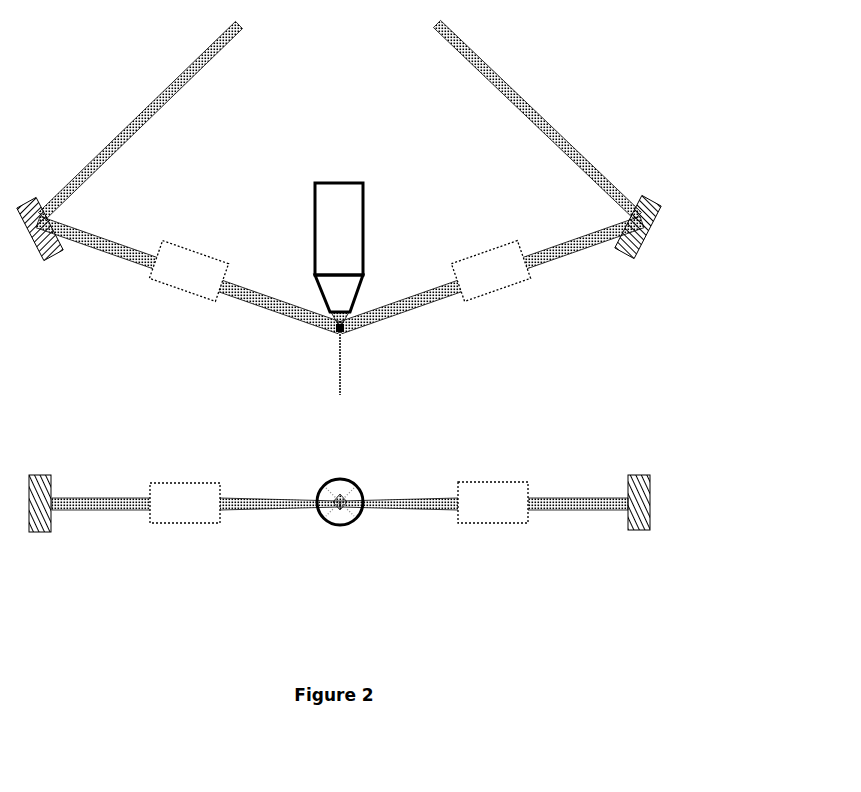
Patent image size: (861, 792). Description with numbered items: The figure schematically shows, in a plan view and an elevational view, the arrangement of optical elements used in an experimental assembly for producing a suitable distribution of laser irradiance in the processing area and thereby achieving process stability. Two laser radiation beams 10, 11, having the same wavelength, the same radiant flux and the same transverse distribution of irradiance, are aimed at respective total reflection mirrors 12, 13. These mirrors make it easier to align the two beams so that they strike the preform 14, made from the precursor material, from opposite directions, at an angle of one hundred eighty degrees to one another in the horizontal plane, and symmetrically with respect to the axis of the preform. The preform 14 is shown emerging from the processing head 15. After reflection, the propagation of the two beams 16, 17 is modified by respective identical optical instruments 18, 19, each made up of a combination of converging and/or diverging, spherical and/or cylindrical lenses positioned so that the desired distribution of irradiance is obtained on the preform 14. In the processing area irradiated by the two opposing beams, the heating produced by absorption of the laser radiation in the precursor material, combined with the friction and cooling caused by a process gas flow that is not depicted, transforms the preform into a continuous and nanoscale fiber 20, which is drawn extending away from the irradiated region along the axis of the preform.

The laser radiation beam 10 is at (194, 80).
The laser radiation beam 11 is at (478, 77).
The total reflection mirror 12 is at (28, 197).
The total reflection mirror 13 is at (650, 197).
The preform 14 is at (345, 330).
The processing head 15 is at (350, 181).
The beam 16 is at (258, 302).
The beam 17 is at (428, 300).
The optical instrument 18 is at (195, 250).
The optical instrument 19 is at (482, 248).
The continuous and nanoscale fiber 20 is at (337, 380).